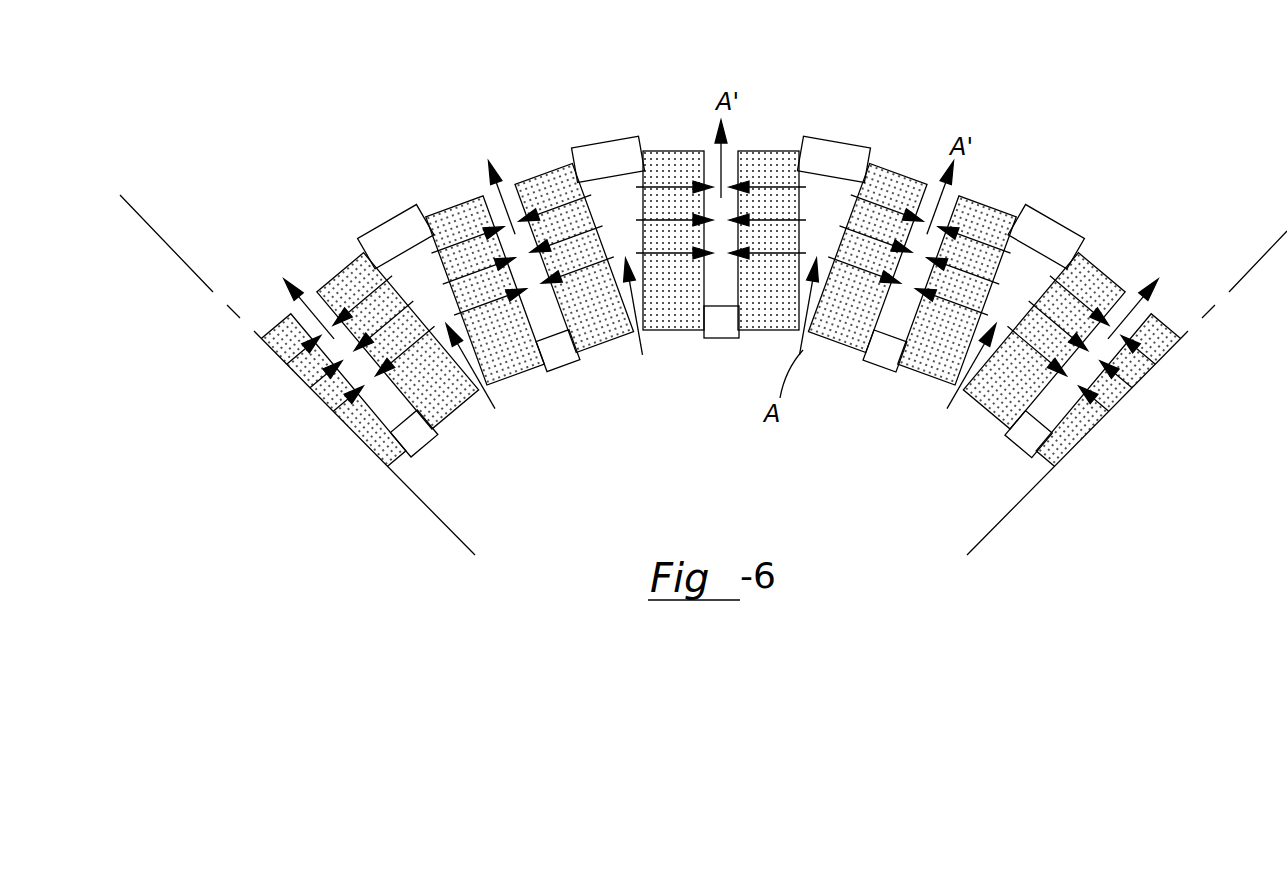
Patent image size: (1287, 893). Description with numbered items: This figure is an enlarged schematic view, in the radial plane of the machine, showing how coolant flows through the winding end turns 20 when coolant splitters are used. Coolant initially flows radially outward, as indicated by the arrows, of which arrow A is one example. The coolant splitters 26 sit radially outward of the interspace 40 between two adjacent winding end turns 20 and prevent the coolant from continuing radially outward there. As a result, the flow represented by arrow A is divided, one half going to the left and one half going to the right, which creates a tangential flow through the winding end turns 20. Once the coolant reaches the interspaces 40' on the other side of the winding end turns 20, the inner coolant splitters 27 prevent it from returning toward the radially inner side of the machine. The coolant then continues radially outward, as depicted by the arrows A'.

The winding end turns 20 is at (773, 168).
The coolant splitters 26 is at (833, 152).
The inner coolant splitters 27 is at (721, 336).
The interspace 40 is at (721, 259).
The interspaces 40' is at (720, 187).